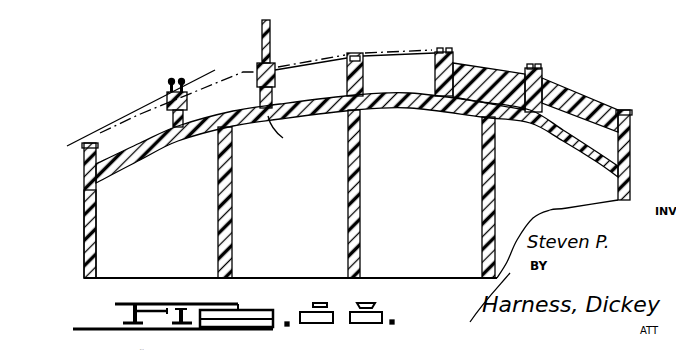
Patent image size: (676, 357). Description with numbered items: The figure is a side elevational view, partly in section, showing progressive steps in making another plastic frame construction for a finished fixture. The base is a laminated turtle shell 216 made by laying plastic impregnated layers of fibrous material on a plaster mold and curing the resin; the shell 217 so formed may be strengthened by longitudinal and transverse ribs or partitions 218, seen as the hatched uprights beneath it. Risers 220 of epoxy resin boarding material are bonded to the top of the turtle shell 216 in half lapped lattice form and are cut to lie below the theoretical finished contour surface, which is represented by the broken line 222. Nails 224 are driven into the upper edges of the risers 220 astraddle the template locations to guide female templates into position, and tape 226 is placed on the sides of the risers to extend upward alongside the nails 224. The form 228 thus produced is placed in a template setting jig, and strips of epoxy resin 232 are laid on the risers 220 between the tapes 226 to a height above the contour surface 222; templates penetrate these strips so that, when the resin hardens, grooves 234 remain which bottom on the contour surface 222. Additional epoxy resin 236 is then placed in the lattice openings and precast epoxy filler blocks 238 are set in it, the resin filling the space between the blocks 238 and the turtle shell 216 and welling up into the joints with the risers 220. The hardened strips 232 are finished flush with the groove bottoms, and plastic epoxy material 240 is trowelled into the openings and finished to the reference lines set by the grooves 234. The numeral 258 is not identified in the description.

The laminated turtle shell 216 is at (402, 109).
The shell 217 is at (293, 133).
The ribs or partitions 218 is at (233, 179).
The risers 220 is at (91, 143).
The theoretical finished contour surface 222 is at (115, 118).
The nails 224 is at (251, 96).
The tape 226 is at (167, 99).
The form 228 is at (82, 210).
The strips of epoxy resin 232 is at (190, 104).
The grooves 234 is at (357, 53).
The epoxy resin 236 is at (434, 93).
The precast epoxy filler blocks 238 is at (500, 70).
The plastic epoxy material 240 is at (600, 97).
The rod 258 is at (267, 22).